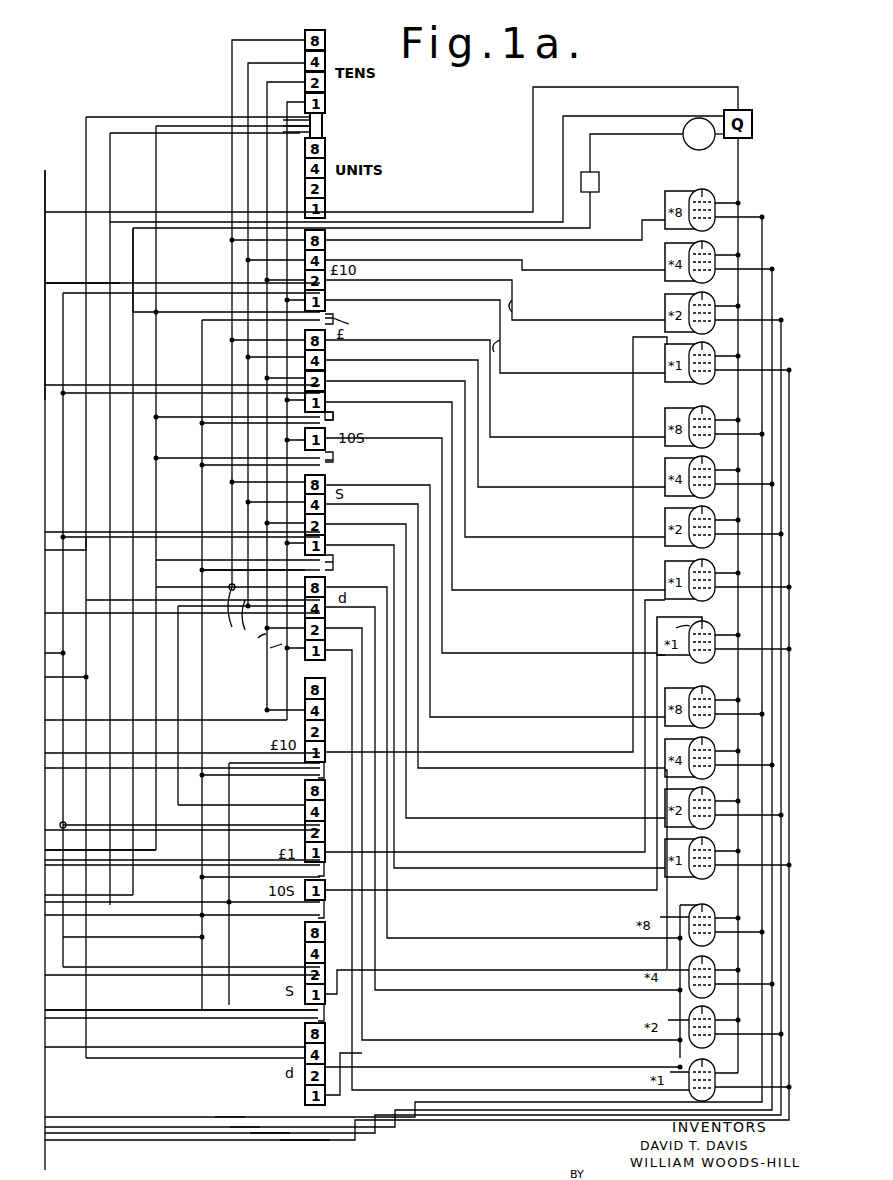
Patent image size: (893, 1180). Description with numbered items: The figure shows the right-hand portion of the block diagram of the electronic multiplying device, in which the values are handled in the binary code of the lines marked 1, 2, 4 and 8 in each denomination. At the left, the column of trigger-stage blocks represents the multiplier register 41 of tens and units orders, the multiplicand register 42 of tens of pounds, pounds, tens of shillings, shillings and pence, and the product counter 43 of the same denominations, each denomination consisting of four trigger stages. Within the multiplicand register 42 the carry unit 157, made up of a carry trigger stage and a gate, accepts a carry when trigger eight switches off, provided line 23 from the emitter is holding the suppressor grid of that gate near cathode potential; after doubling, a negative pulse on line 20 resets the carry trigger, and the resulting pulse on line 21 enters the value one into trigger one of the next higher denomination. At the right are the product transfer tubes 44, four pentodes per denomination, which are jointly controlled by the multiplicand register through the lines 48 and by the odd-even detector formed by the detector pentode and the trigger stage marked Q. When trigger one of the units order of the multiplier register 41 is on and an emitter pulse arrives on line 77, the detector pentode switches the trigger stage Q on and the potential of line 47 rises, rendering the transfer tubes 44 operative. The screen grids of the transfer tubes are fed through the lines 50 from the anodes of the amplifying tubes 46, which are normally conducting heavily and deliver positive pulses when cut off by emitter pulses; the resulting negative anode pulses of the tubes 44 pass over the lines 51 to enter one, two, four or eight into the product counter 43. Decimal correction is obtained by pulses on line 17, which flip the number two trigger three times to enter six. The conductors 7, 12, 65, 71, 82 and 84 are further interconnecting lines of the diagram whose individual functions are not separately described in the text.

The multiplier register 41 is at (318, 125).
The conductor to Q gate 65 is at (392, 210).
The conductor to Q gate 71 is at (460, 210).
The line 77 is at (651, 134).
The amplifying tube 46 is at (408, 181).
The line 47 is at (738, 200).
The line 50 is at (762, 212).
The line 51 is at (630, 398).
The line 48 is at (490, 358).
The product transfer tube 44 is at (690, 606).
The line 20 is at (150, 164).
The conductors 7 is at (190, 280).
The line 21 is at (341, 568).
The carry unit 157 is at (357, 398).
The multiplicand register 42 is at (342, 416).
The line 23 is at (202, 570).
The conductor group 12 is at (255, 617).
The product counter 43 is at (304, 808).
The conductor 84 is at (172, 872).
The line 17 is at (54, 360).
The conductor 82 is at (120, 1010).
The line 8 is at (223, 1120).
The line 4 is at (246, 1126).
The line 2 is at (275, 1133).
The line 1 is at (312, 1140).